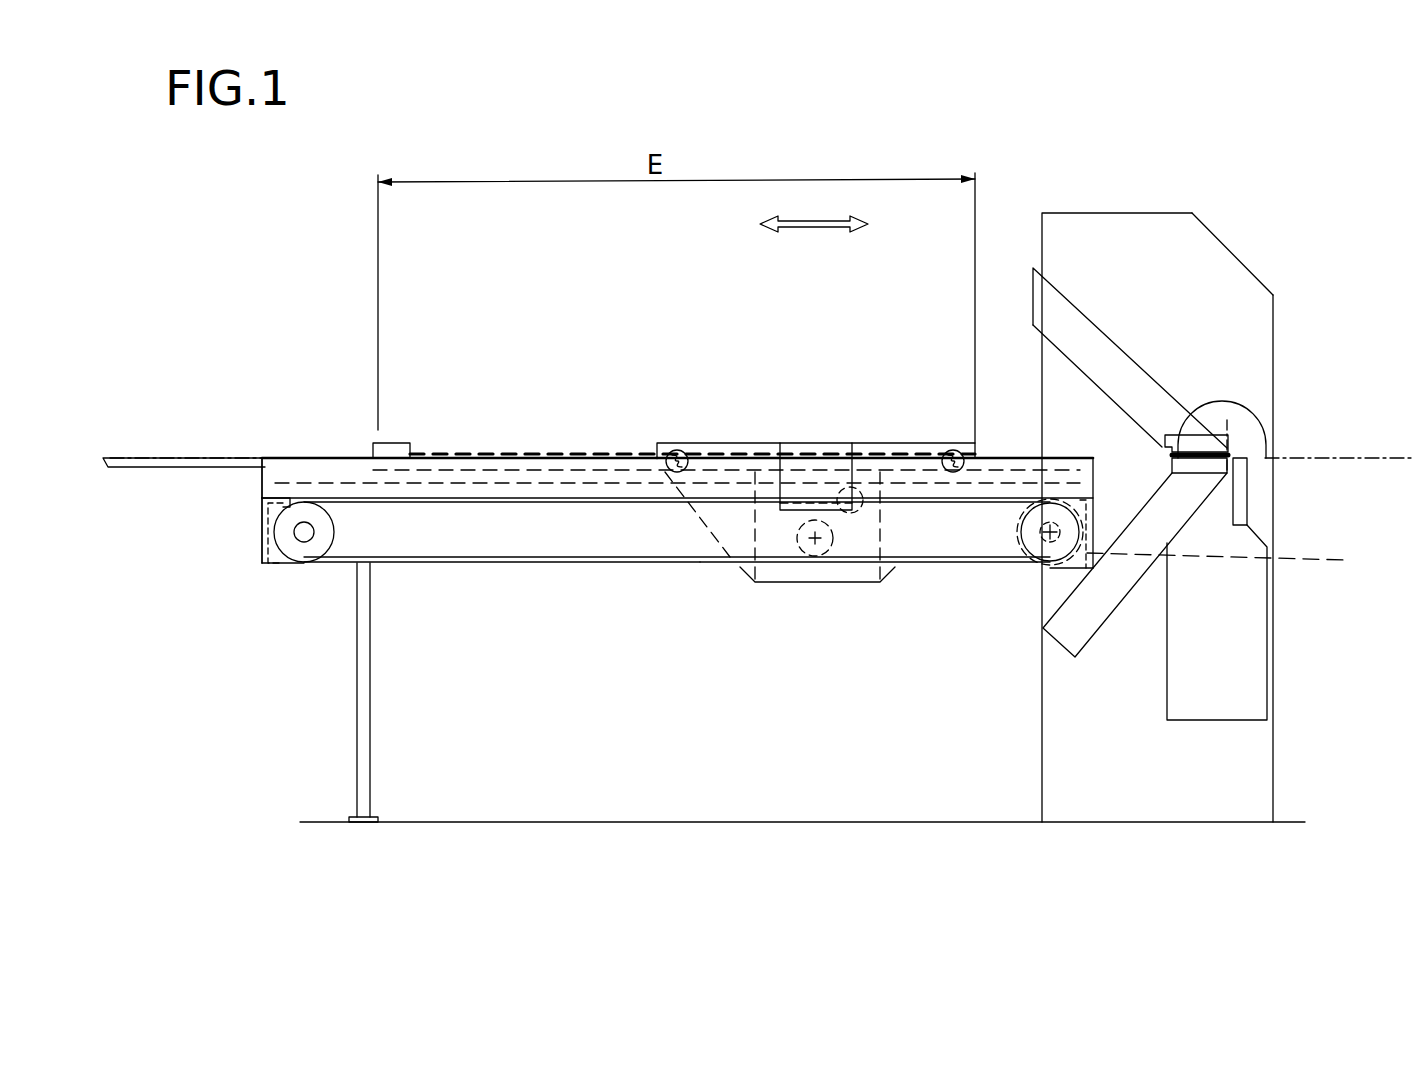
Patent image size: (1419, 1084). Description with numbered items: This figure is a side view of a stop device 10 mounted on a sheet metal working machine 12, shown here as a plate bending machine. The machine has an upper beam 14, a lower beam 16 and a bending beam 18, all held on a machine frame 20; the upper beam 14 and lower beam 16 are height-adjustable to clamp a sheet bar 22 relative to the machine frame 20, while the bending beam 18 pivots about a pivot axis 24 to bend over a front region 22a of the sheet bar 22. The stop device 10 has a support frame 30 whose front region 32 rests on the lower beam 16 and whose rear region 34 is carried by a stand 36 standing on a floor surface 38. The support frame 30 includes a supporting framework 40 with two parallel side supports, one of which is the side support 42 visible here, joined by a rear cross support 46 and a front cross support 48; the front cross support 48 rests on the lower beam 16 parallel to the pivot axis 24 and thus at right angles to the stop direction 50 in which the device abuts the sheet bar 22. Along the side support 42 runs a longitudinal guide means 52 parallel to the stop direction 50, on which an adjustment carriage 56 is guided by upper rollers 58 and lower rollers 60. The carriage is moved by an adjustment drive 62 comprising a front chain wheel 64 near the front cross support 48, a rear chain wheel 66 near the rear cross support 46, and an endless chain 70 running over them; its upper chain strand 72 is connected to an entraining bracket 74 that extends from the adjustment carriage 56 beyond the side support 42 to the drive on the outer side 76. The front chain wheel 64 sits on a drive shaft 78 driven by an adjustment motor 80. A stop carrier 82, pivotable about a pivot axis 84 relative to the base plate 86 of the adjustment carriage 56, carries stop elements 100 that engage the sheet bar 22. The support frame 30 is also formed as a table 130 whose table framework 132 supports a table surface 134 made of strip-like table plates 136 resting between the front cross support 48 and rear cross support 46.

The stop device 10 is at (303, 417).
The sheet metal working machine 12 is at (1215, 487).
The upper beam 14 is at (1180, 423).
The lower beam 16 is at (1128, 590).
The bending beam 18 is at (1248, 493).
The machine frame 20 is at (1240, 307).
The sheet bar 22 is at (1120, 458).
The front region of the sheet bar 22a is at (1320, 456).
The pivot axis 24 is at (1232, 452).
The support frame 30 is at (523, 582).
The front region of the support frame 32 is at (1080, 573).
The rear region of the support frame 34 is at (288, 570).
The stand 36 is at (362, 662).
The floor surface 38 is at (718, 822).
The supporting framework 40 is at (245, 533).
The side support 42 is at (680, 563).
The rear cross support 46 is at (262, 572).
The front cross support 48 is at (1239, 567).
The stop direction 50 is at (808, 223).
The longitudinal guide means 52 is at (505, 483).
The adjustment carriage 56 is at (760, 430).
The upper rollers 58 is at (672, 455).
The lower rollers 60 is at (860, 488).
The adjustment drive 62 is at (402, 575).
The front chain wheel 64 is at (1033, 553).
The rear chain wheel 66 is at (312, 568).
The endless chain 70 is at (607, 560).
The upper chain strand 72 is at (577, 497).
The entraining bracket 74 is at (820, 448).
The outer side 76 is at (473, 530).
The drive shaft 78 is at (1032, 570).
The adjustment motor 80 is at (1020, 525).
The stop carrier 82 is at (770, 578).
The pivot axis 84 is at (820, 548).
The base plate 86 is at (718, 448).
The stop element 100 is at (424, 447).
The table 130 is at (245, 486).
The table framework 132 is at (255, 473).
The table surface 134 is at (333, 458).
The table plates 136 is at (130, 458).